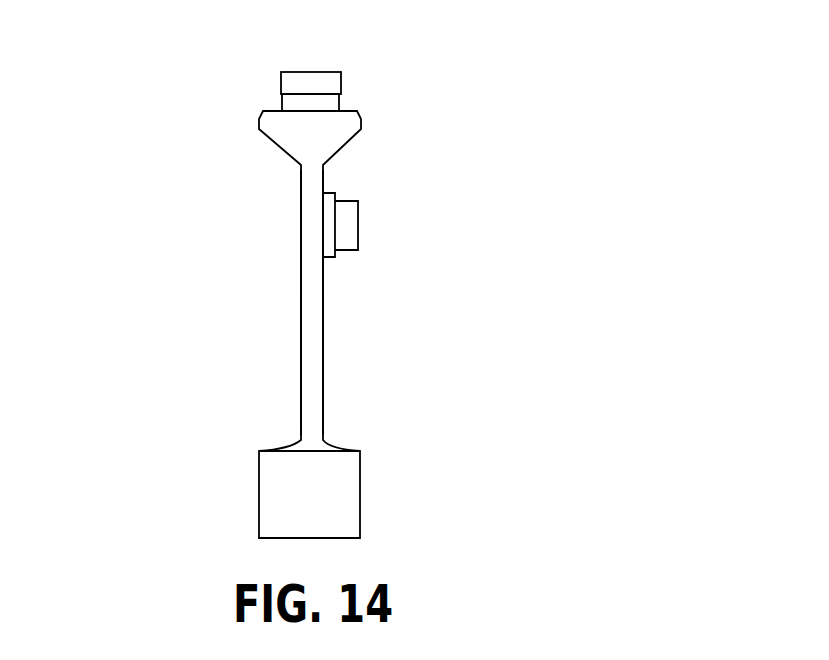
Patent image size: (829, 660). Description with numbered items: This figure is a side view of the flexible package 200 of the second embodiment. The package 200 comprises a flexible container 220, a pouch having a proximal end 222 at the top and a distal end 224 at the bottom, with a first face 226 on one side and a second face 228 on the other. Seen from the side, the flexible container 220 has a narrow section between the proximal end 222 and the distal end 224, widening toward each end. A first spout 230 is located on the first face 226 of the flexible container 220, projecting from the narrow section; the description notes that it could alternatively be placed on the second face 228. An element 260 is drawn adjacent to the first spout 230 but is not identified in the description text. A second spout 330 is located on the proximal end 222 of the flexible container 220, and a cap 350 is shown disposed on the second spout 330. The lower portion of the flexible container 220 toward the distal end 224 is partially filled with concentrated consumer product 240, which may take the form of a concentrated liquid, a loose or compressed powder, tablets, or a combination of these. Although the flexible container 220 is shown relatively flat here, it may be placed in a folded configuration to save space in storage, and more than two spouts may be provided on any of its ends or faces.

The flexible package 200 is at (289, 295).
The flexible container 220 is at (310, 283).
The proximal end 222 is at (362, 142).
The distal end 224 is at (373, 473).
The first face 226 is at (323, 387).
The second face 228 is at (300, 362).
The first spout 230 is at (330, 247).
The concentrated consumer product 240 is at (284, 496).
The sensor 260 is at (350, 240).
The second spout 330 is at (330, 102).
The cap 350 is at (308, 83).